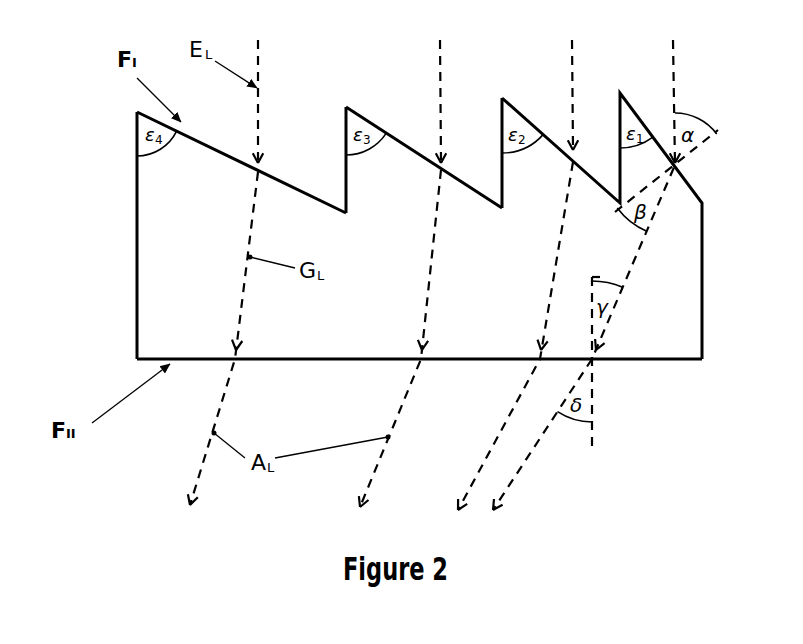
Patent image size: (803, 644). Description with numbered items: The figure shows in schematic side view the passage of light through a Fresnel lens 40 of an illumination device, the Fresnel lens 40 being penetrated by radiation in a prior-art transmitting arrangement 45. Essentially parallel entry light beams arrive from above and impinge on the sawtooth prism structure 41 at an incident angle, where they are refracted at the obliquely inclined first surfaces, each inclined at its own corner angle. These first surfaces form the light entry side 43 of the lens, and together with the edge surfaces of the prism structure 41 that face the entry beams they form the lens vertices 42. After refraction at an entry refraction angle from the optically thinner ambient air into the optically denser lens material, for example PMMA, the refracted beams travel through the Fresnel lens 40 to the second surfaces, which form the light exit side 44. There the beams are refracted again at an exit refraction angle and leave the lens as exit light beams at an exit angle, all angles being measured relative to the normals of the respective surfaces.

The Fresnel lens 40 is at (180, 258).
The prism structure 41 is at (349, 98).
The lens vertices 42 is at (502, 97).
The light entry side 43 is at (392, 137).
The light exit side 44 is at (657, 360).
The transmitting arrangement 45 is at (126, 201).